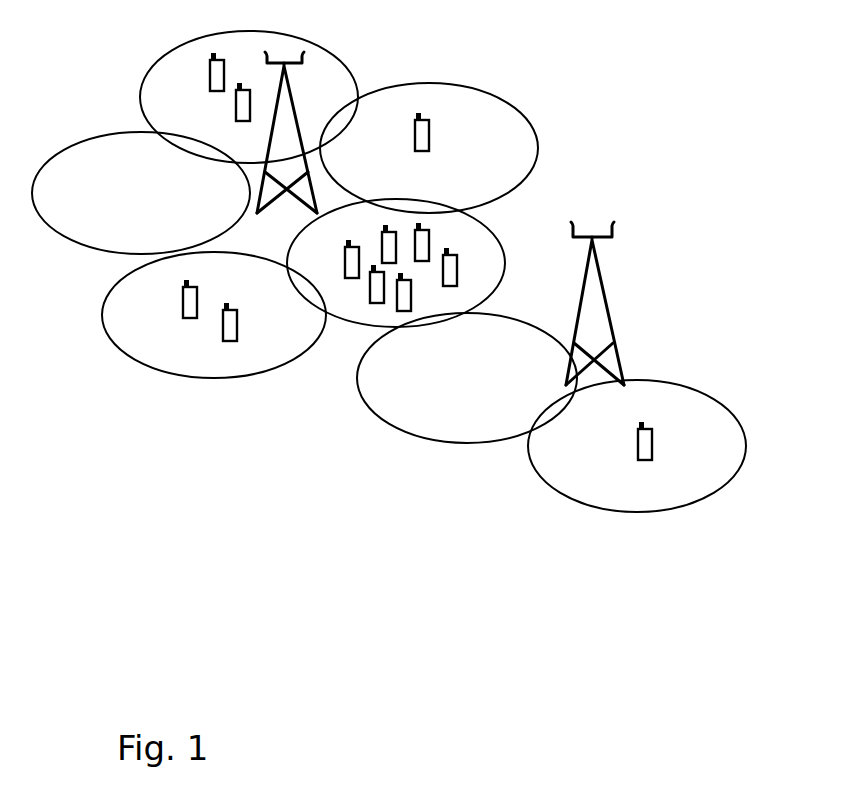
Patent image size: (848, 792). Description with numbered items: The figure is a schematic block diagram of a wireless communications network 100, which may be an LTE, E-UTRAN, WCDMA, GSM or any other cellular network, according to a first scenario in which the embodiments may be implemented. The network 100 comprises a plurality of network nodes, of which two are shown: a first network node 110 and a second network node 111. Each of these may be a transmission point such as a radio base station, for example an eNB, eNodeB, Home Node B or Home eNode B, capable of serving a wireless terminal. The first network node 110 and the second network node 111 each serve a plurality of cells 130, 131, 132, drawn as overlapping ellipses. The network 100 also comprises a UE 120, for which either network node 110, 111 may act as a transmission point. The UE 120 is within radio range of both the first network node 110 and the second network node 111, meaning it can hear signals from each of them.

The wireless communications network 100 is at (521, 552).
The first network node 110 is at (302, 55).
The second network node 111 is at (611, 323).
The user equipment 120 is at (183, 307).
The cell 130 is at (90, 253).
The cell 131 is at (187, 43).
The cell 132 is at (353, 325).